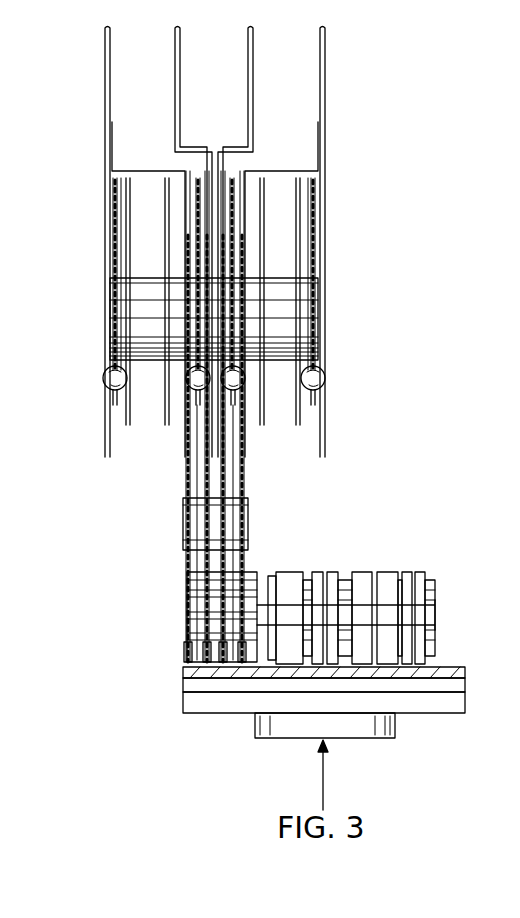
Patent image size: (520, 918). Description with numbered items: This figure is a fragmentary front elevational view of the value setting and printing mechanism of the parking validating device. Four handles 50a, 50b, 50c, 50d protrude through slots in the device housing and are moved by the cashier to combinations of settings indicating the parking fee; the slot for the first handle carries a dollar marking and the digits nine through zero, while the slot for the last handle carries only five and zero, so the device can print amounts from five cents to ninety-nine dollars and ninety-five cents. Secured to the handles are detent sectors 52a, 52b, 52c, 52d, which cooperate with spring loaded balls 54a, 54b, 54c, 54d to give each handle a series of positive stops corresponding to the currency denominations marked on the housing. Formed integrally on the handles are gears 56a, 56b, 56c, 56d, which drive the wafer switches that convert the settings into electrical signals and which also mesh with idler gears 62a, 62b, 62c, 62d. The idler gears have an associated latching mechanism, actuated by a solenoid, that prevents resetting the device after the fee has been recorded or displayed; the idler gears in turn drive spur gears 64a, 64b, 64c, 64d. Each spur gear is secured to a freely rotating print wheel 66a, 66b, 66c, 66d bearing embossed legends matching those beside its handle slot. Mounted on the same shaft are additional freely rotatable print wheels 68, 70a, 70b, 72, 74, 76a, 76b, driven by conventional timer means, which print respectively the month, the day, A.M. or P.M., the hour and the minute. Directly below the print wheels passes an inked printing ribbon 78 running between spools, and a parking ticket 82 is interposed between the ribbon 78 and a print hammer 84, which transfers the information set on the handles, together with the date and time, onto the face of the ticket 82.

The handle 50a is at (105, 62).
The handle 50b is at (175, 76).
The handle 50c is at (253, 52).
The handle 50d is at (325, 68).
The detent sector 52a is at (112, 192).
The detent sector 52b is at (196, 178).
The detent sector 52c is at (234, 178).
The detent sector 52d is at (316, 193).
The spring loaded ball 54a is at (103, 378).
The spring loaded ball 54b is at (190, 390).
The spring loaded ball 54c is at (241, 390).
The spring loaded ball 54d is at (325, 378).
The gear 56a is at (195, 300).
The gear 56b is at (200, 318).
The gear 56c is at (240, 300).
The gear 56d is at (240, 318).
The idler gear 62a is at (186, 478).
The idler gear 62b is at (205, 492).
The idler gear 62c is at (226, 478).
The idler gear 62d is at (245, 492).
The spur gear 64a is at (188, 645).
The spur gear 64b is at (207, 655).
The spur gear 64c is at (225, 660).
The spur gear 64d is at (243, 660).
The print wheel 66a is at (198, 576).
The print wheel 66b is at (217, 596).
The print wheel 66c is at (233, 617).
The print wheel 66d is at (250, 637).
The print wheel 68 is at (285, 572).
The print wheel 70a is at (322, 562).
The print wheel 70b is at (355, 560).
The print wheel 72 is at (362, 572).
The print wheel 74 is at (388, 572).
The print wheel 76a is at (407, 572).
The print wheel 76b is at (420, 572).
The inked printing ribbon 78 is at (470, 662).
The parking ticket 82 is at (465, 684).
The print hammer 84 is at (455, 708).